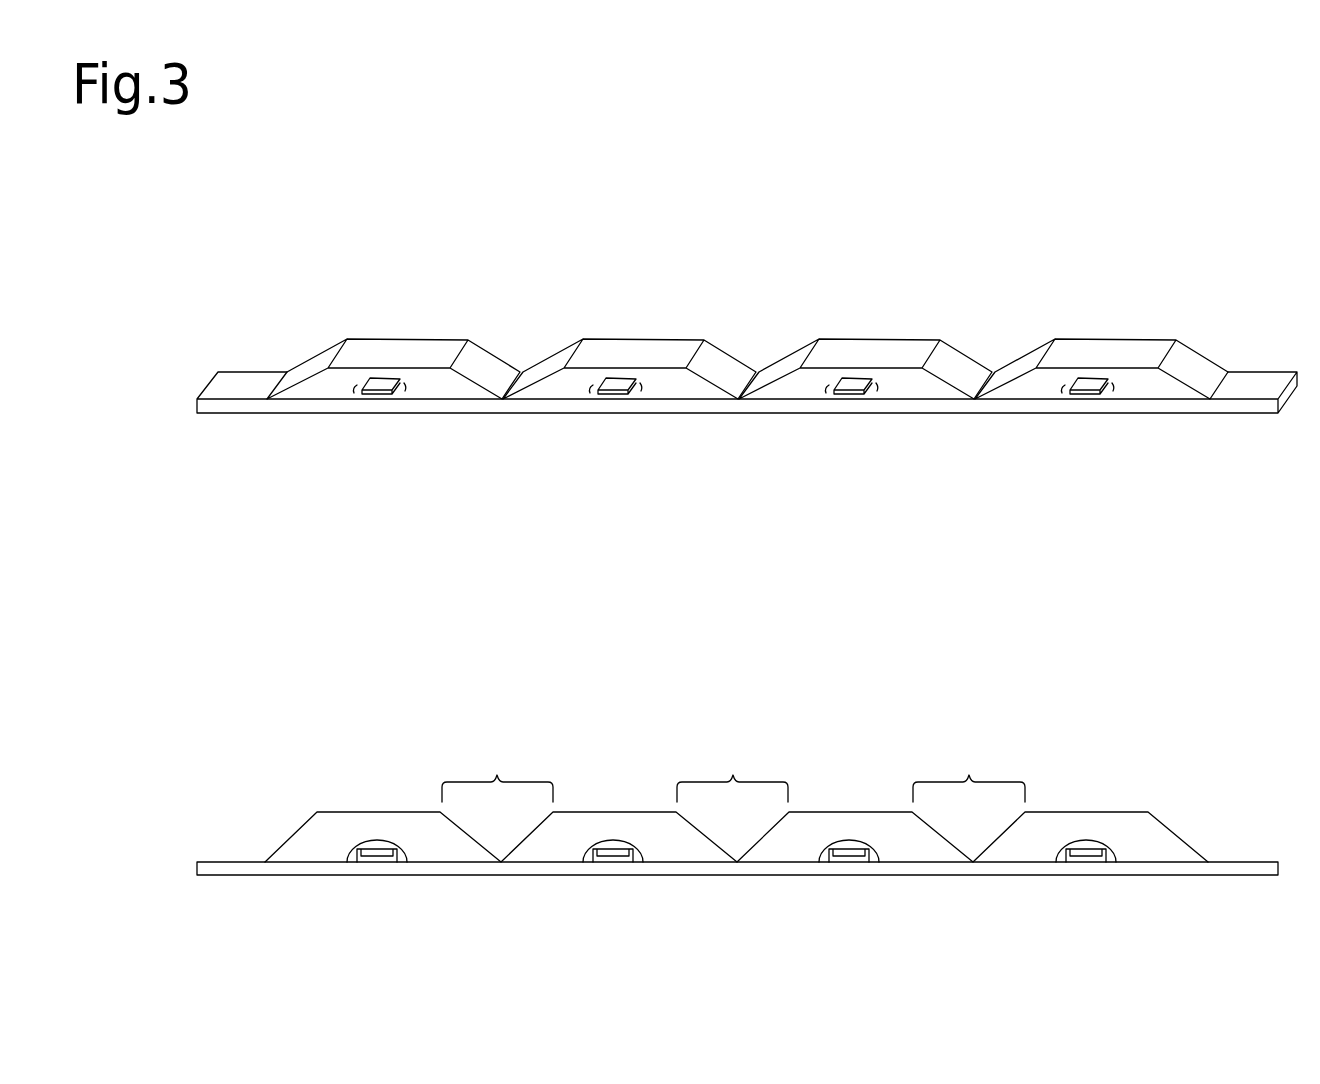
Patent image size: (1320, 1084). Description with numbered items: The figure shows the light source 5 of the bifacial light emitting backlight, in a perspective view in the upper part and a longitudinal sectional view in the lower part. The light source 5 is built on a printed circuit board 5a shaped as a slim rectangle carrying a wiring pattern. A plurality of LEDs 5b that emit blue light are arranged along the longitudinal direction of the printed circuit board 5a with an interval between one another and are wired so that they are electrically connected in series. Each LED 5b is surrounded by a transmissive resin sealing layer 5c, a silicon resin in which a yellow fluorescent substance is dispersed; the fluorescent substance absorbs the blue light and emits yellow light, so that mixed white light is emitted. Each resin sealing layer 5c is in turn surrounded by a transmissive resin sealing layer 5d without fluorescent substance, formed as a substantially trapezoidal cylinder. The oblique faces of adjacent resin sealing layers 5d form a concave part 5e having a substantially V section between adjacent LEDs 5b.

The light source 5 is at (795, 297).
The printed circuit board 5a is at (1252, 414).
The LED 5b is at (378, 394).
The transmissive resin sealing layer containing a fluorescent substance 5c is at (392, 845).
The transmissive resin sealing layer not containing a fluorescent substance 5d is at (435, 350).
The concave part 5e is at (733, 771).